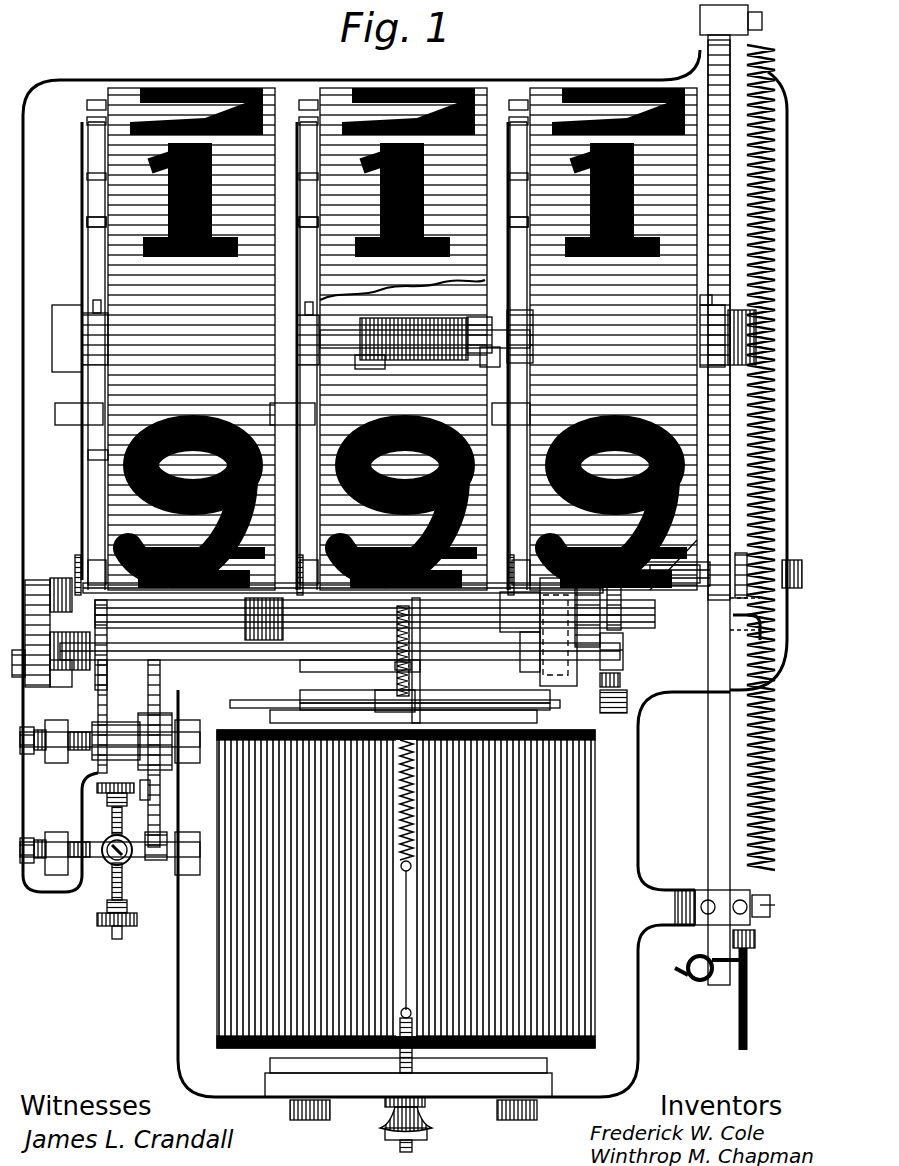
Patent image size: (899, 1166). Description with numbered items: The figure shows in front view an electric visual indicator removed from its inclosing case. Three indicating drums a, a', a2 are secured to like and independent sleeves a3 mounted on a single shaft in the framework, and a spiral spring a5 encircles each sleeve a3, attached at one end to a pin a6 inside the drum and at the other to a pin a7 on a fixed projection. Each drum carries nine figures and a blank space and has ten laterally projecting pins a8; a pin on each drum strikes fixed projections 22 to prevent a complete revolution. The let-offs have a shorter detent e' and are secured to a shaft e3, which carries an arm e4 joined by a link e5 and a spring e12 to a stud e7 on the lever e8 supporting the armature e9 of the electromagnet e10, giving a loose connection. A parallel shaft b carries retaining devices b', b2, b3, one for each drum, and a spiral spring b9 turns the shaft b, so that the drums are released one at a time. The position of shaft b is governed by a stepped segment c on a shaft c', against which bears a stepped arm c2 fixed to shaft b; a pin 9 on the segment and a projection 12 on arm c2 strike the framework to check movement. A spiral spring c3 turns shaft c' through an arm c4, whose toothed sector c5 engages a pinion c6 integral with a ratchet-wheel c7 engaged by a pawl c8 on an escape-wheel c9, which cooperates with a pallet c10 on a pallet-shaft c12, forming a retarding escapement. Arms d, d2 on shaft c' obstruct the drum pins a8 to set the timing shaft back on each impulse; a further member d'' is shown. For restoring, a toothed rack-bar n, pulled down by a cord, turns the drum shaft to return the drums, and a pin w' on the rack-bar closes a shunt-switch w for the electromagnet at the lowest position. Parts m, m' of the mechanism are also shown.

The drum a is at (181, 339).
The drum a' is at (393, 339).
The drum a2 is at (603, 339).
The sleeve a3 is at (475, 318).
The spiral spring a5 is at (380, 322).
The pin a6 is at (370, 366).
The pin a7 is at (485, 360).
The pins a8 is at (98, 218).
The fixed projections 22 is at (70, 428).
The shaft b is at (340, 635).
The retaining device b' is at (68, 555).
The retaining device b2 is at (300, 555).
The retaining device b3 is at (511, 555).
The spiral spring b9 is at (60, 578).
The stepped segment c is at (563, 627).
The shaft c' is at (510, 634).
The projection or arm c2 is at (555, 634).
The spiral spring c3 is at (65, 687).
The arm c4 is at (107, 693).
The toothed sector c5 is at (108, 783).
The pinion or toothed hub c6 is at (115, 724).
The ratchet-wheel c7 is at (160, 715).
The pawl c8 is at (145, 800).
The escape-wheel c9 is at (162, 805).
The pallet c10 is at (158, 860).
The pallet-shaft c12 is at (135, 860).
The arm d is at (375, 622).
The arm d2 is at (520, 628).
The lever d'' is at (341, 671).
The detent e' is at (309, 558).
The shaft e3 is at (215, 618).
The arm or projection e4 is at (397, 630).
The link e5 is at (420, 670).
The stud e7 is at (378, 692).
The lever e8 is at (430, 700).
The armature e9 is at (475, 715).
The electromagnet e10 is at (600, 905).
The spring e12 is at (395, 666).
The shaft m is at (655, 592).
The sleeve m' is at (675, 590).
The toothed rack-bar n is at (708, 530).
The shunt-switch w is at (741, 919).
The pin w' is at (759, 627).
The projection 12 is at (612, 650).
The pin 9 is at (622, 682).